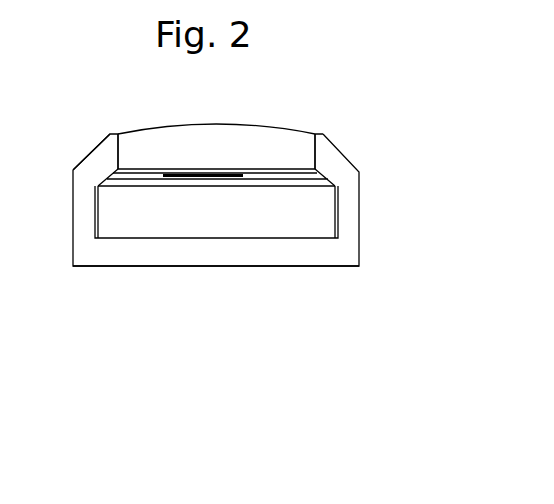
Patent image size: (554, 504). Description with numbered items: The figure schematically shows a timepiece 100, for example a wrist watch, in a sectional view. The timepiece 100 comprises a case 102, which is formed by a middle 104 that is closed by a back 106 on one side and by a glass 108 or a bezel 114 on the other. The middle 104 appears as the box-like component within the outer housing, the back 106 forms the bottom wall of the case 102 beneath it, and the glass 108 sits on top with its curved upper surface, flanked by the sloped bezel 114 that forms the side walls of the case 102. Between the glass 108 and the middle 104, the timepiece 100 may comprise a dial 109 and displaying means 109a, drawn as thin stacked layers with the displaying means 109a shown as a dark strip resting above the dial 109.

The timepiece 100 is at (240, 188).
The case 102 is at (360, 177).
The middle 104 is at (348, 222).
The back 106 is at (282, 250).
The glass 108 is at (175, 140).
The dial 109 is at (193, 181).
The displaying means 109a is at (235, 172).
The bezel 114 is at (95, 167).